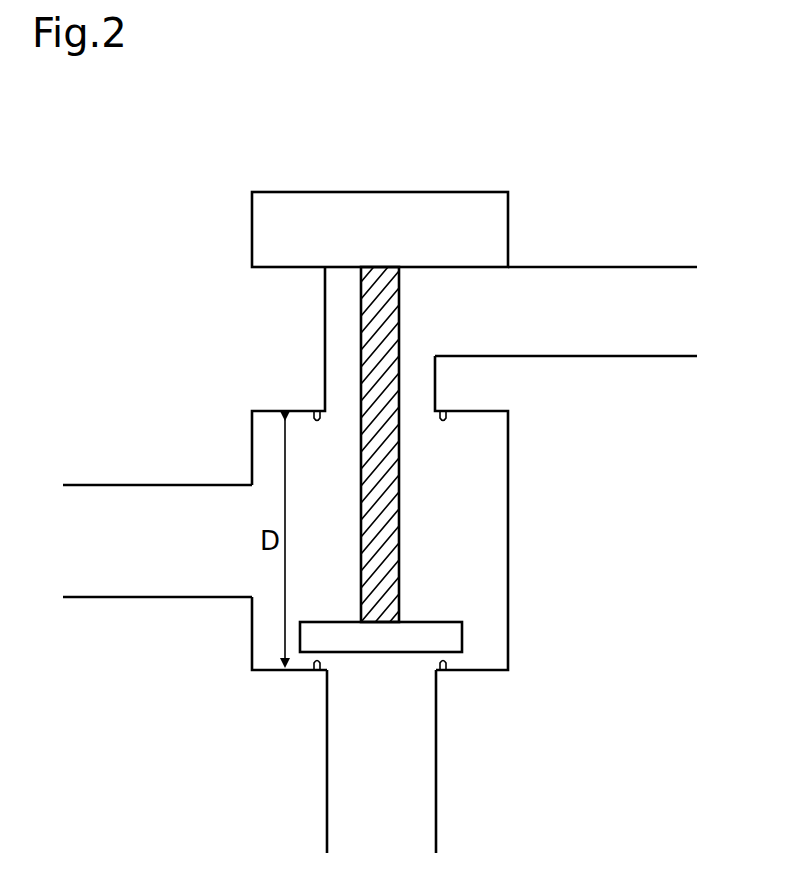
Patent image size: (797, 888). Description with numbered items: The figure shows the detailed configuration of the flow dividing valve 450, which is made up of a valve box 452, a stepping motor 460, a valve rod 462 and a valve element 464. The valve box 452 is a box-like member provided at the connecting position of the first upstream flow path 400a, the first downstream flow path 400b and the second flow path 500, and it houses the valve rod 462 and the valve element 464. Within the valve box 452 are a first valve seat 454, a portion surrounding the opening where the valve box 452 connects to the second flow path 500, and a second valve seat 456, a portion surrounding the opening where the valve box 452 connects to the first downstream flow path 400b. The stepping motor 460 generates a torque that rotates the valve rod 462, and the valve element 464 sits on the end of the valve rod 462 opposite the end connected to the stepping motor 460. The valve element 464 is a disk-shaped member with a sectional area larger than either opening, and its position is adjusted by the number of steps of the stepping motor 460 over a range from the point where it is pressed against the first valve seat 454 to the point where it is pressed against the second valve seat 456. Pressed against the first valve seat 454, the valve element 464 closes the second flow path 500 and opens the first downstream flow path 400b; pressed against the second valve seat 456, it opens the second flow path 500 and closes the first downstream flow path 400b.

The stepping motor 460 is at (378, 192).
The first downstream flow path 400b is at (613, 267).
The first upstream flow path 400a is at (160, 485).
The valve box 452 is at (508, 538).
The second flow path 500 is at (436, 776).
The valve rod 462 is at (400, 517).
The valve element 464 is at (450, 622).
The second valve seat 456 is at (317, 411).
The first valve seat 454 is at (317, 670).
The flow dividing valve 450 is at (576, 446).